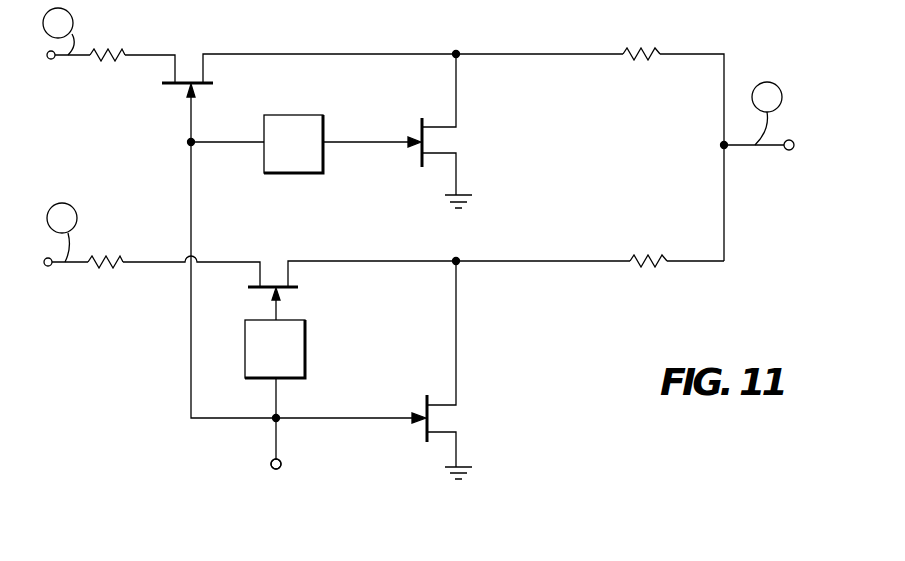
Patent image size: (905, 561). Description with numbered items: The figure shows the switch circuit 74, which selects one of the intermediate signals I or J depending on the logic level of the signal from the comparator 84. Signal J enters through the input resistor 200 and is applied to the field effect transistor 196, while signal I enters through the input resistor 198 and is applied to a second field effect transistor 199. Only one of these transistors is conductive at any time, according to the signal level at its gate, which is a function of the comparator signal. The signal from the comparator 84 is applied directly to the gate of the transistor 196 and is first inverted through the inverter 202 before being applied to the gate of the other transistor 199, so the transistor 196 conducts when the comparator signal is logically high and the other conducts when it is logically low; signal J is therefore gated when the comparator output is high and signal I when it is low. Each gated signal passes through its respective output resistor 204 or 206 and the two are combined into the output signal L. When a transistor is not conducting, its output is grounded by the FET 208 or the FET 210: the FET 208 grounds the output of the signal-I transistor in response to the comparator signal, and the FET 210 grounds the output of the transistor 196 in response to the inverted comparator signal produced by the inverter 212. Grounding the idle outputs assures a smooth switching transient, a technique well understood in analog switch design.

The switch circuit 74 is at (580, 433).
The comparator 84 is at (271, 464).
The field effect transistor 196 is at (210, 89).
The input resistor 198 is at (107, 253).
The transistor 199 is at (297, 289).
The input resistor 200 is at (101, 50).
The inverter 202 is at (306, 351).
The output resistor 204 is at (653, 54).
The output resistor 206 is at (645, 263).
The FET 208 is at (423, 422).
The FET 210 is at (418, 152).
The inverter 212 is at (290, 174).